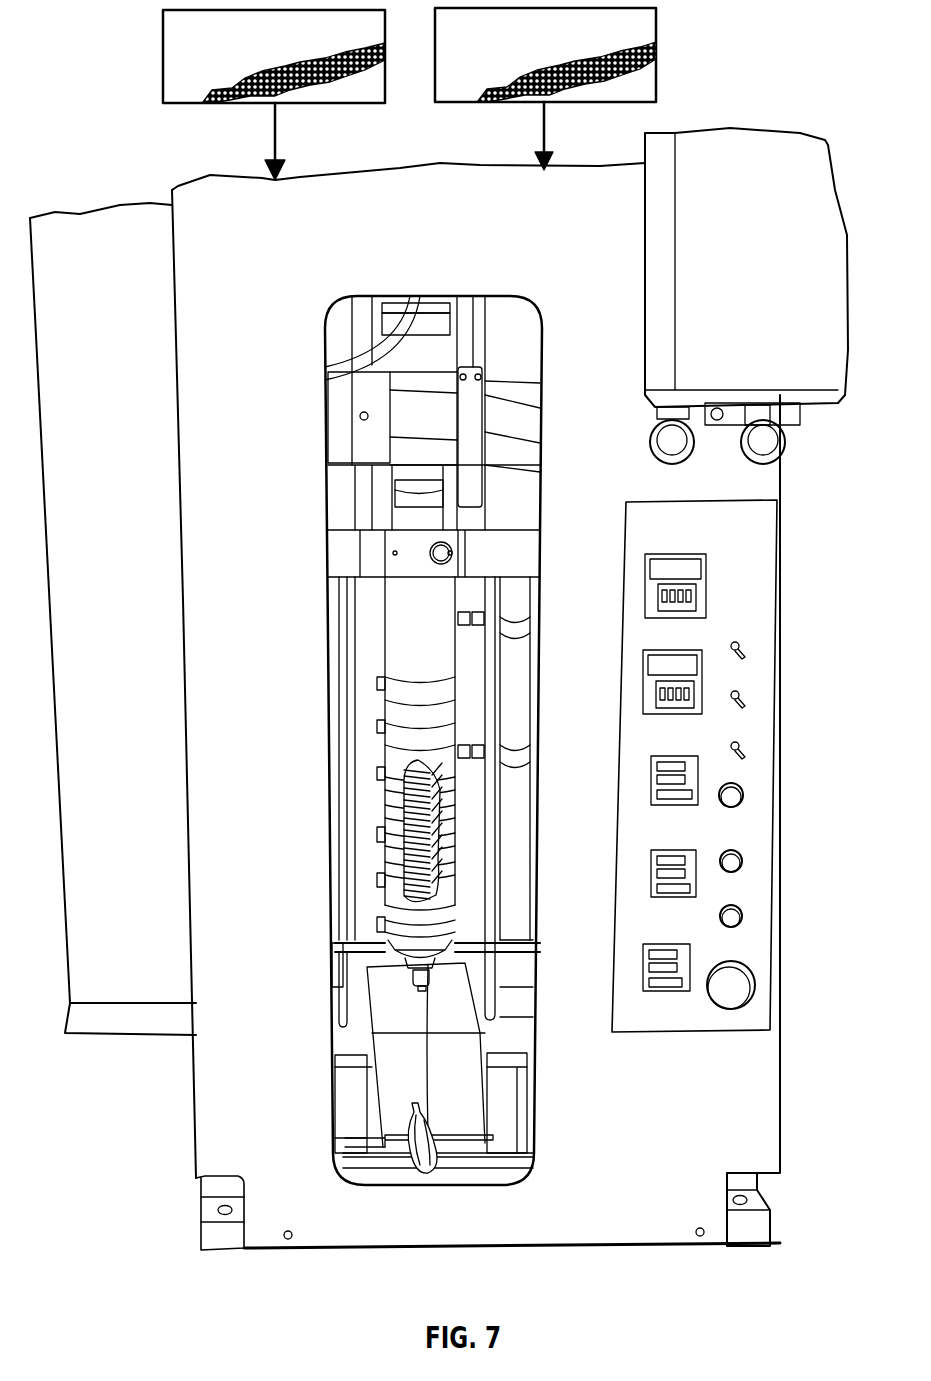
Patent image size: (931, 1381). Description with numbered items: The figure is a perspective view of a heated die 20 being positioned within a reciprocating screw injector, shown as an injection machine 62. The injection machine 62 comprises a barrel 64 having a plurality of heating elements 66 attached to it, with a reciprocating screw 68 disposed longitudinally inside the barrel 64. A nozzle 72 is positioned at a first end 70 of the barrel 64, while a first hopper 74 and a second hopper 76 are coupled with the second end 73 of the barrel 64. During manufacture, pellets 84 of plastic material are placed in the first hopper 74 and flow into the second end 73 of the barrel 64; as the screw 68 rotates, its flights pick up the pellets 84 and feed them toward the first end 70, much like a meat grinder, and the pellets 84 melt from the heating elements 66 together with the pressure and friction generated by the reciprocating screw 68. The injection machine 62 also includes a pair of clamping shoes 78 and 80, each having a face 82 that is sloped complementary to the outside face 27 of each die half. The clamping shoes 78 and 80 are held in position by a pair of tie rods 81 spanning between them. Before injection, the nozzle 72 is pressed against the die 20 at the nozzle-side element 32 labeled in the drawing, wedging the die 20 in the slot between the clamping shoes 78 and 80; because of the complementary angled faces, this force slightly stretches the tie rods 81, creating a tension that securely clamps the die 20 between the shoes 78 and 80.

The first hopper 74 is at (185, 55).
The second hopper 76 is at (637, 32).
The pellets 84 is at (205, 97).
The injection machine 62 is at (237, 1020).
The second end 73 is at (397, 598).
The barrel 64 is at (397, 668).
The heating elements 66 is at (387, 777).
The reciprocating screw 68 is at (452, 830).
The first end 70 is at (448, 935).
The nozzle 72 is at (445, 975).
The nozzle tip 32 is at (430, 990).
The tie rods 81 is at (338, 950).
The die 20 is at (462, 1093).
The outside face 27 is at (367, 1088).
The clamping shoe 78 is at (365, 1137).
The face 82 is at (465, 1133).
The clamping shoe 80 is at (508, 1133).